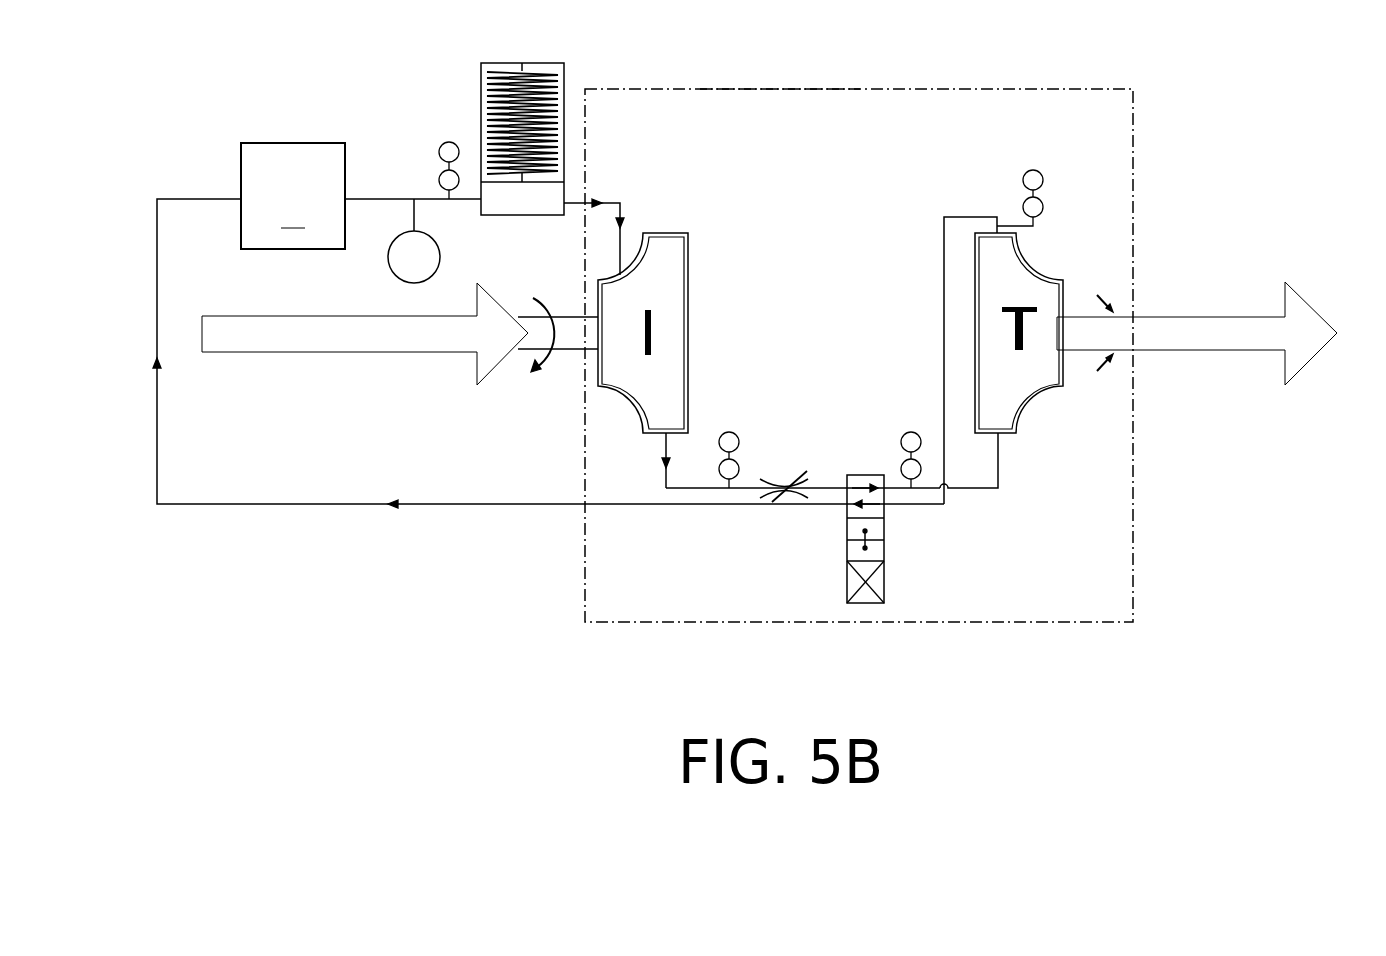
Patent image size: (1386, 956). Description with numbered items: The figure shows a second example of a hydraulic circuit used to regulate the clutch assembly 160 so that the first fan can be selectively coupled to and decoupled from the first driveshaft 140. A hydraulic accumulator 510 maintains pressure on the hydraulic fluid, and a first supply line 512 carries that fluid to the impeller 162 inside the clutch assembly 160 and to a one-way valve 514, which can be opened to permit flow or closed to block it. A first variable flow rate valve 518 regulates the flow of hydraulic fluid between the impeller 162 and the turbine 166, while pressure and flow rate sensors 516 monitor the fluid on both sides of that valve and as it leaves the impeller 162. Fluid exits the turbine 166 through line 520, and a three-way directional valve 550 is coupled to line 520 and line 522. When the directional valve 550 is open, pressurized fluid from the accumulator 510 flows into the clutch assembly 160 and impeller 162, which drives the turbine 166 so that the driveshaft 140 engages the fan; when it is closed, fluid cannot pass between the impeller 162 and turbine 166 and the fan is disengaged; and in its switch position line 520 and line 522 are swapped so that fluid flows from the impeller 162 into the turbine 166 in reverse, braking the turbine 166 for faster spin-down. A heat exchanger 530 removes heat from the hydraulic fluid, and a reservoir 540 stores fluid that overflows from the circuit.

The first driveshaft 140 is at (577, 333).
The clutch assembly 160 is at (1048, 89).
The impeller 162 is at (665, 233).
The turbine 166 is at (1033, 260).
The hydraulic accumulator 510 is at (514, 63).
The first supply line 512 is at (620, 247).
The one-way valve 514 is at (772, 88).
The pressure and flow rate sensors 516 is at (460, 145).
The first variable flow rate valve 518 is at (776, 466).
The line 520 is at (940, 363).
The line 522 is at (687, 505).
The heat exchanger 530 is at (293, 196).
The reservoir 540 is at (389, 259).
The 3-way directional valve 550 is at (865, 608).